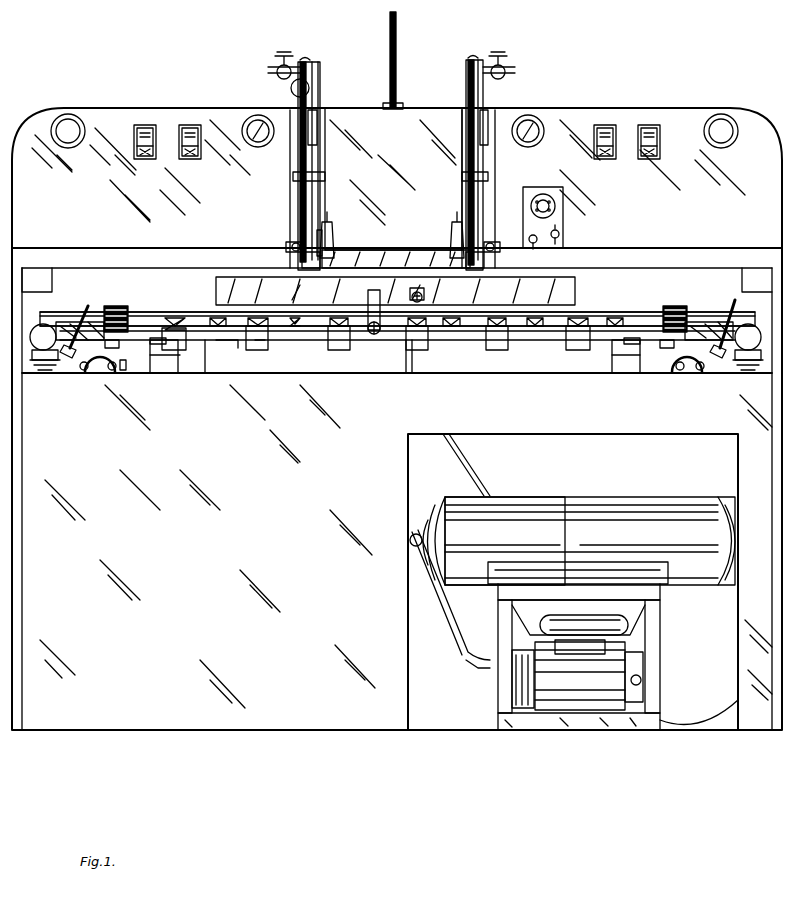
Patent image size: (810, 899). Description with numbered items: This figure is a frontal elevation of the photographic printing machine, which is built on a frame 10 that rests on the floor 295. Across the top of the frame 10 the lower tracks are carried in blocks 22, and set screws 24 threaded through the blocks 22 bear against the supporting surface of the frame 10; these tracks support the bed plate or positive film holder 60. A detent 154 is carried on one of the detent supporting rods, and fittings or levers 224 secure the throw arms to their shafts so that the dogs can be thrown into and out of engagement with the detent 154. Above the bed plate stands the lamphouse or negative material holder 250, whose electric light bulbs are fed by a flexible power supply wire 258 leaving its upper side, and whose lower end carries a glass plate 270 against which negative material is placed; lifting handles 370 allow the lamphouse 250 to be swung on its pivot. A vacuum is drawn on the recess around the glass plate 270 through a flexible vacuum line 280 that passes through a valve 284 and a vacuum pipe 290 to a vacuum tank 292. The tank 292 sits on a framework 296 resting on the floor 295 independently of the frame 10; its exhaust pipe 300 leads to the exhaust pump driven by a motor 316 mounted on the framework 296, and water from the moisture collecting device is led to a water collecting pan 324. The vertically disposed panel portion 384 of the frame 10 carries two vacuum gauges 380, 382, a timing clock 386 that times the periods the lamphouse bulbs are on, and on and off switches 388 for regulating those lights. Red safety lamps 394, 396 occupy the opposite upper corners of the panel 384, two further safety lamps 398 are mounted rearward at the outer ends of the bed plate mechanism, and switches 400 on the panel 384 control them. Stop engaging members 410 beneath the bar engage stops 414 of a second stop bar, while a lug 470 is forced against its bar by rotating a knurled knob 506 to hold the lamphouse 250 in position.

The frame 10 is at (150, 733).
The blocks 22 is at (100, 372).
The set screws 24 is at (84, 370).
The positive film holder 60 is at (583, 293).
The detent 154 is at (330, 350).
The fittings 224 is at (90, 302).
The lamphouse 250 is at (372, 112).
The power supply wire 258 is at (398, 70).
The glass plate 270 is at (352, 270).
The vacuum line 280 is at (300, 190).
The valve 284 is at (273, 64).
The vacuum pipe 290 is at (413, 362).
The vacuum tank 292 is at (626, 497).
The floor 295 is at (430, 730).
The framework 296 is at (660, 640).
The exhaust pipe 300 is at (451, 599).
The motor 316 is at (622, 672).
The water collecting pan 324 is at (630, 612).
The lifting handles 370 is at (300, 238).
The vacuum gauge 380 is at (255, 117).
The vacuum gauge 382 is at (533, 117).
The panel portion 384 is at (125, 243).
The timing clock 386 is at (556, 213).
The on and off switches 388 is at (537, 243).
The safety lamp 394 is at (74, 114).
The safety lamp 396 is at (717, 114).
The safety lamps 398 is at (40, 350).
The switches 400 is at (156, 159).
The stop engaging members 410 is at (155, 350).
The stops 414 is at (170, 360).
The lug 470 is at (286, 247).
The knurled knob 506 is at (302, 262).